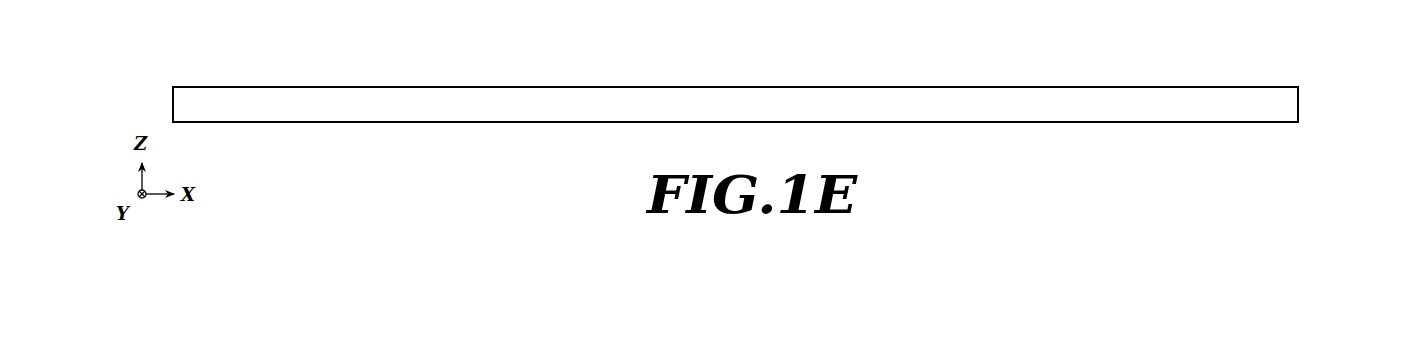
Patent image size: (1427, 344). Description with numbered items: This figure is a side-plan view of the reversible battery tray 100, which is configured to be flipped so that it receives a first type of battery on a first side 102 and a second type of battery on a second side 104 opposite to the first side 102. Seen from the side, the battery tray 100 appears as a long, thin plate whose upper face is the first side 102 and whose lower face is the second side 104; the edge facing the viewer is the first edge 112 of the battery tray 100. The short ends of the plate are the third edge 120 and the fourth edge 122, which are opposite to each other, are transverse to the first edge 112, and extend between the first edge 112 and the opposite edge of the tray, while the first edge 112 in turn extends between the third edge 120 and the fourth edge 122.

The battery tray 100 is at (187, 50).
The first side 102 is at (417, 86).
The second side 104 is at (318, 123).
The first edge 112 is at (575, 107).
The third edge 120 is at (1300, 110).
The fourth edge 122 is at (172, 103).